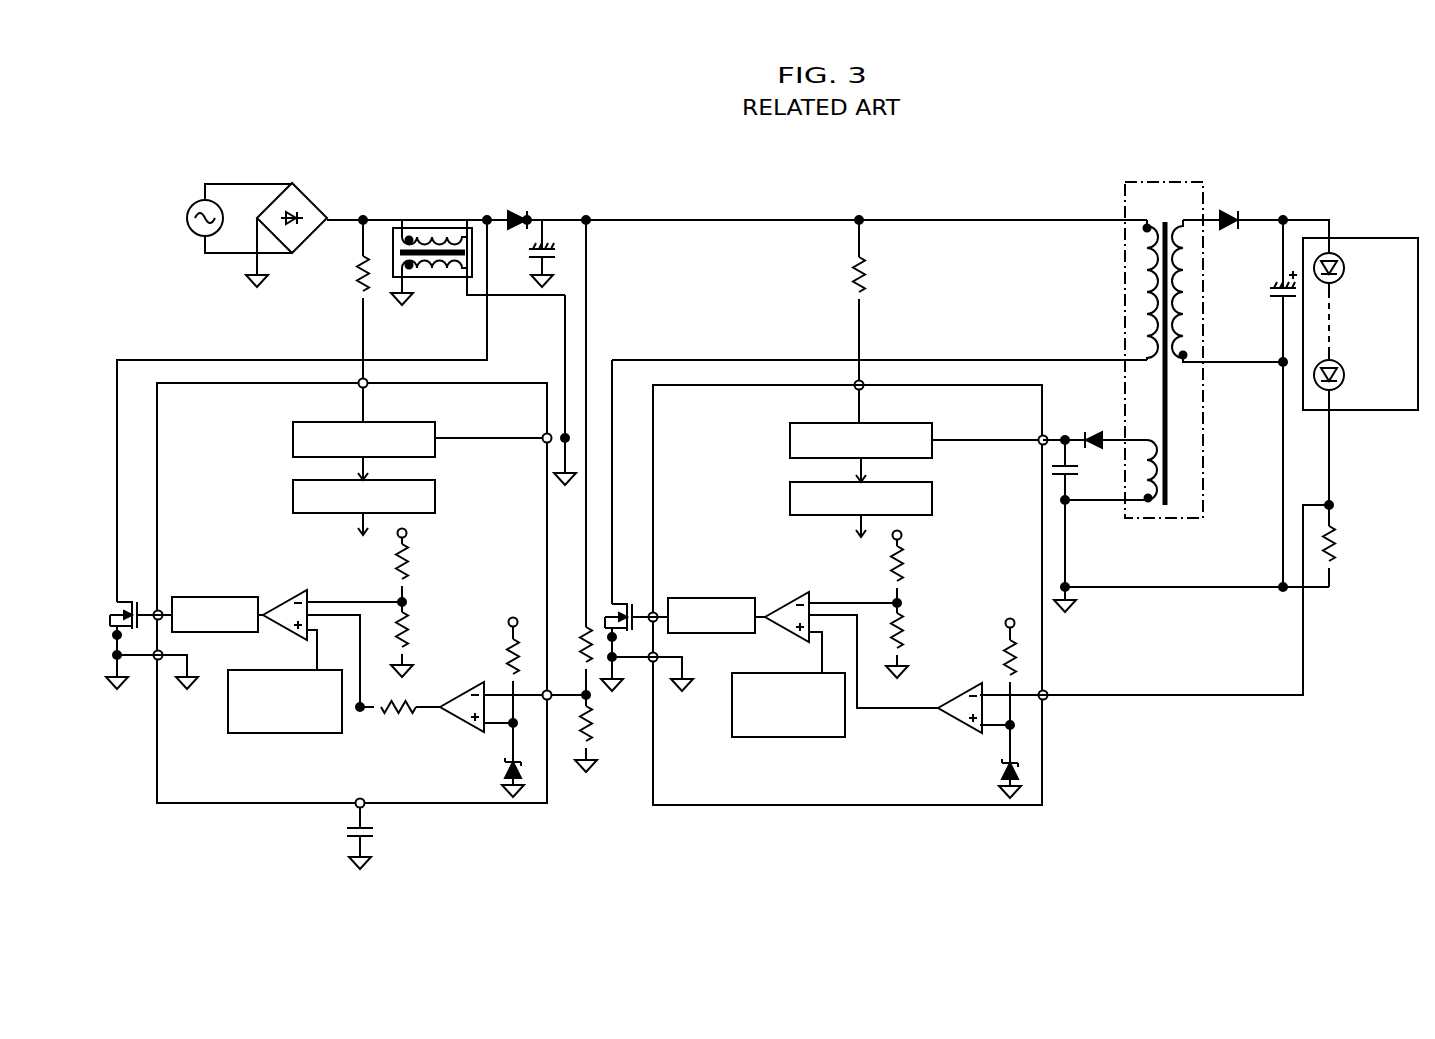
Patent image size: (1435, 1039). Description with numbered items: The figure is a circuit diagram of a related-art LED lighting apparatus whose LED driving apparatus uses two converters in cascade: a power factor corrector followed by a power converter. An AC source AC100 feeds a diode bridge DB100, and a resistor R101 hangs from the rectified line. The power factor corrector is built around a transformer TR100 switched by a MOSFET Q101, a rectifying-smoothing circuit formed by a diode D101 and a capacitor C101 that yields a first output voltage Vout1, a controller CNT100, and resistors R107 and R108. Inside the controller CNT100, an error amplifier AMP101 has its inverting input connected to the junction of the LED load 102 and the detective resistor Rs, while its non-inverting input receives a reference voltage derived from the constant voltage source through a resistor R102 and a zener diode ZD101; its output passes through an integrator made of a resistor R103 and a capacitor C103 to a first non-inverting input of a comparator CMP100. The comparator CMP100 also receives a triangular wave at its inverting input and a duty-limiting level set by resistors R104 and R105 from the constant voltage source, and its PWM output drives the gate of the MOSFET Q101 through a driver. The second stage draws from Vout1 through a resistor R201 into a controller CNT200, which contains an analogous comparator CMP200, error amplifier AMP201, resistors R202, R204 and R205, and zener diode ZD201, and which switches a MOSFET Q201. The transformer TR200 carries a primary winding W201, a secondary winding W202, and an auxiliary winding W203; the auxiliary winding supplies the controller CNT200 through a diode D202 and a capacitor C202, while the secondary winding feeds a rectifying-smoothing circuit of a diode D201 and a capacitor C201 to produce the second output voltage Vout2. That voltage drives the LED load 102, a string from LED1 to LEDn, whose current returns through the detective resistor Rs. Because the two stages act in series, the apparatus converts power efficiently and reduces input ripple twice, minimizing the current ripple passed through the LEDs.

The AC power source AC100 is at (188, 201).
The diode bridge DB100 is at (288, 221).
The resistor R101 is at (331, 297).
The transformer TR100 is at (478, 248).
The diode D101 is at (546, 205).
The capacitor C101 is at (573, 251).
The output voltage Vout1 is at (862, 205).
The resistor R201 is at (891, 321).
The controller CNT100 is at (365, 593).
The resistor R104 is at (436, 572).
The resistor R105 is at (431, 639).
The comparator CMP100 is at (285, 600).
The MOSFET Q101 is at (136, 605).
The resistor R103 is at (398, 725).
The error amplifier AMP101 is at (462, 722).
The resistor R102 is at (480, 675).
The zener diode ZD101 is at (500, 764).
The resistor R107 is at (574, 648).
The resistor R108 is at (598, 722).
The capacitor C103 is at (325, 838).
The controller CNT200 is at (848, 595).
The resistor R204 is at (930, 573).
The resistor R205 is at (926, 640).
The comparator CMP200 is at (785, 600).
The MOSFET Q201 is at (631, 605).
The error amplifier AMP201 is at (950, 717).
The resistor R202 is at (975, 676).
The zener diode ZD201 is at (970, 761).
The diode D202 is at (1095, 426).
The capacitor C202 is at (1045, 476).
The transformer TR200 is at (1152, 180).
The primary winding W201 is at (1146, 274).
The secondary winding W202 is at (1180, 272).
The auxiliary winding W203 is at (1144, 492).
The diode D201 is at (1230, 212).
The output voltage Vout2 is at (1274, 209).
The capacitor C201 is at (1258, 405).
The LED load 102 is at (1360, 300).
The first LED LED1 is at (1360, 265).
The n-th LED LEDn is at (1360, 381).
The detective resistor Rs is at (1210, 552).